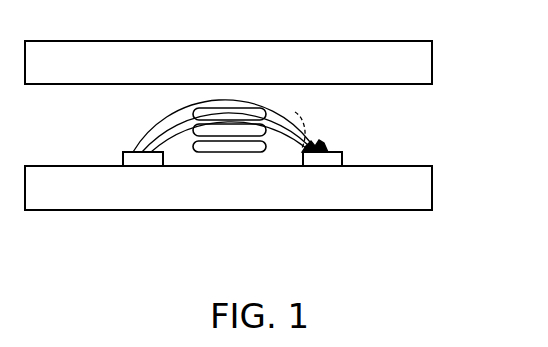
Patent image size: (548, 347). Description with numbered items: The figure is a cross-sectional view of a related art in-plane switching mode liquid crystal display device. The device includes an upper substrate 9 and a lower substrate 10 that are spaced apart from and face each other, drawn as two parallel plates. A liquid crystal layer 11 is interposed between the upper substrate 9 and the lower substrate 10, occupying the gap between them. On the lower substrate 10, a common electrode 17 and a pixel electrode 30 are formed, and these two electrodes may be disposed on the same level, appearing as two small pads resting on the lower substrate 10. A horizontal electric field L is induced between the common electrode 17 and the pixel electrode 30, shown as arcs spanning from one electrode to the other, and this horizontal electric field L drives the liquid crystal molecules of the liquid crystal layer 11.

The upper substrate 9 is at (452, 41).
The lower substrate 10 is at (452, 166).
The liquid crystal layer 11 is at (452, 84).
The pixel electrode 30 is at (143, 160).
The common electrode 17 is at (330, 160).
The horizontal electric field L is at (279, 130).